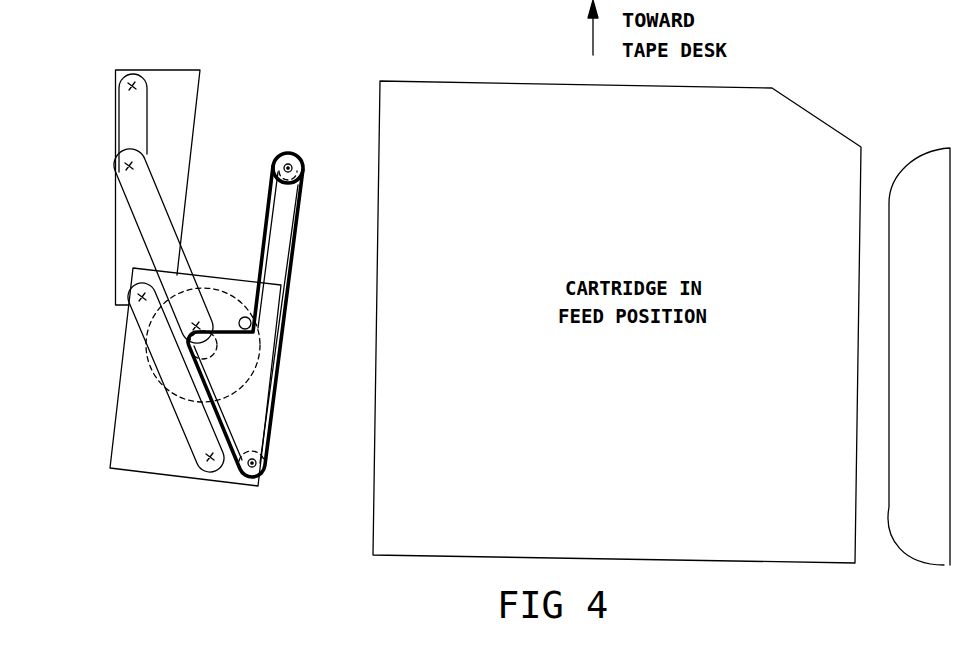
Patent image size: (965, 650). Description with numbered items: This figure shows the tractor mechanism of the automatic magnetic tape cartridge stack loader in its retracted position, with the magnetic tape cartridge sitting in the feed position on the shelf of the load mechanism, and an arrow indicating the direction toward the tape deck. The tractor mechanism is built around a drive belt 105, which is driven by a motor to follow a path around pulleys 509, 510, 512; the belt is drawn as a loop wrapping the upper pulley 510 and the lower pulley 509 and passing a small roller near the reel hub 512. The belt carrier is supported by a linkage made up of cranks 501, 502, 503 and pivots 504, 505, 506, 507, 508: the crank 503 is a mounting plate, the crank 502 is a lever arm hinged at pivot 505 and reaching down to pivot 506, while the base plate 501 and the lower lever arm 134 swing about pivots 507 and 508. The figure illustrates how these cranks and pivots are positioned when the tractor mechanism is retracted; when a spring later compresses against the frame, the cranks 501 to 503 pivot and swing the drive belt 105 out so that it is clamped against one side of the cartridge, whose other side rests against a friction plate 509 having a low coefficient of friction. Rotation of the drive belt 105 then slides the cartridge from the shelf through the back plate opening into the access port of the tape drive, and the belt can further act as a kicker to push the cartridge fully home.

The drive belt 105 is at (273, 432).
The lower lever arm 134 is at (200, 406).
The crank 501 is at (173, 415).
The crank 502 is at (145, 242).
The crank 503 is at (115, 137).
The pivot 504 is at (132, 80).
The pivot 505 is at (124, 163).
The pivot 506 is at (195, 320).
The pivot 507 is at (130, 306).
The pivot 508 is at (213, 472).
The friction plate / pulley 509 is at (268, 476).
The pulley 510 is at (296, 153).
The pulley 512 is at (252, 316).